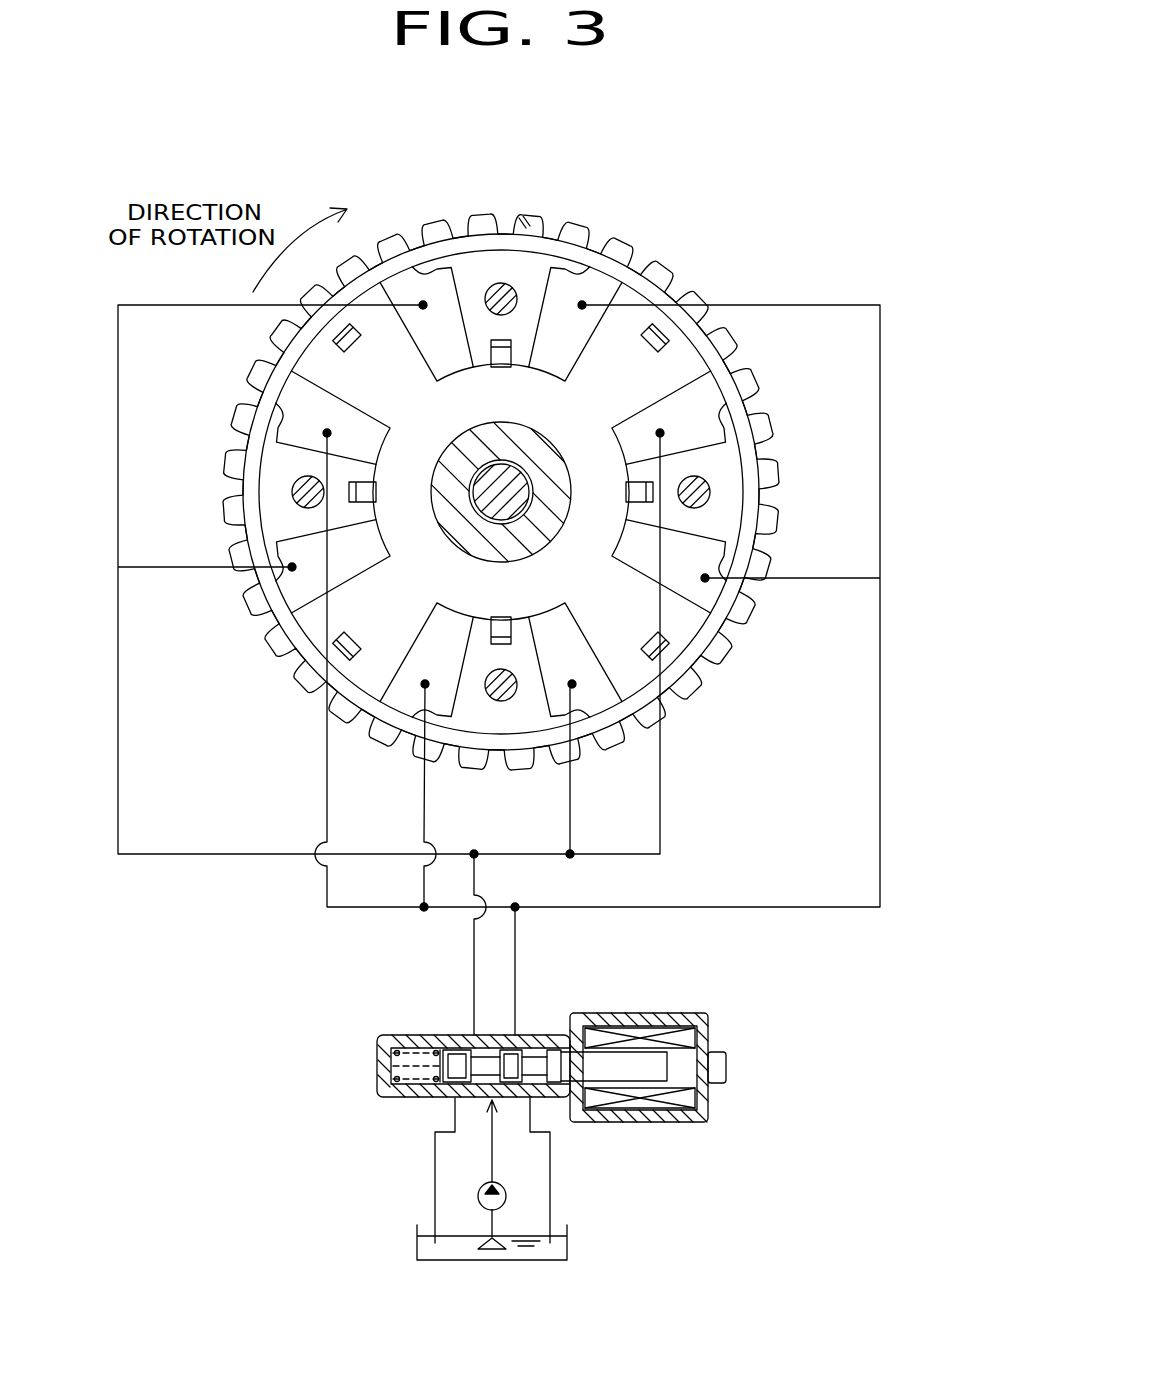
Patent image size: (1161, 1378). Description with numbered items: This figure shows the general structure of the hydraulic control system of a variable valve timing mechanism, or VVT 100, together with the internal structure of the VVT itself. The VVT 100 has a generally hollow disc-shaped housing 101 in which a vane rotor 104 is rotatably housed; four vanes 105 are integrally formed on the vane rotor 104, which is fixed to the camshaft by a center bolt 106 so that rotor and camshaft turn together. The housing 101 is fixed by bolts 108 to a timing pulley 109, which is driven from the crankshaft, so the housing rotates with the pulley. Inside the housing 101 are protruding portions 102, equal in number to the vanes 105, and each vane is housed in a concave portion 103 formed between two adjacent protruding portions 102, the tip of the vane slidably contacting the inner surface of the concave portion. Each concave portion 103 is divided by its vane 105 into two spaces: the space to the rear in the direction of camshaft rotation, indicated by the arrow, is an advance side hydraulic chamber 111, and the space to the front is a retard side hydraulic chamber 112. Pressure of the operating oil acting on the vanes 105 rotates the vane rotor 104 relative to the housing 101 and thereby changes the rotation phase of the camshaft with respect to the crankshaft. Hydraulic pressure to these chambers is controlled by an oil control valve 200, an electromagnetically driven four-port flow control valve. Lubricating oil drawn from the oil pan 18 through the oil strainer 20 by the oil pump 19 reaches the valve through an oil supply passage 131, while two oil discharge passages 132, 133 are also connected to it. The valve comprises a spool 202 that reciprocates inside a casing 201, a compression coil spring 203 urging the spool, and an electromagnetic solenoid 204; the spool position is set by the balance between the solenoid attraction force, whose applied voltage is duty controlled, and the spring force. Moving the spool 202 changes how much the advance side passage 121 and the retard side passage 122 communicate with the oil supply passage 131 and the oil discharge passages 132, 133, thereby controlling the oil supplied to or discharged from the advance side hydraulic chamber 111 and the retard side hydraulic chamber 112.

The VVT 100 is at (676, 236).
The housing 101 is at (522, 222).
The protruding portions 102 is at (542, 296).
The concave portion 103 is at (440, 284).
The vane rotor 104 is at (427, 417).
The vanes 105 is at (318, 355).
The center bolt 106 is at (500, 463).
The bolts 108 is at (497, 283).
The timing pulley 109 is at (700, 291).
The advance side hydraulic chamber 111 is at (581, 338).
The retard side hydraulic chamber 112 is at (461, 338).
The advance side passage 121 is at (518, 934).
The retard side passage 122 is at (470, 960).
The oil supply passage 131 is at (492, 1165).
The oil discharge passage 132 is at (550, 1185).
The oil discharge passage 133 is at (435, 1186).
The oil pan 18 is at (417, 1244).
The oil pump 19 is at (527, 1178).
The oil strainer 20 is at (490, 1263).
The oil control valve 200 is at (601, 1024).
The casing 201 is at (393, 1034).
The spool 202 is at (533, 1046).
The compression coil spring 203 is at (390, 1063).
The electromagnetic solenoid 204 is at (642, 1027).